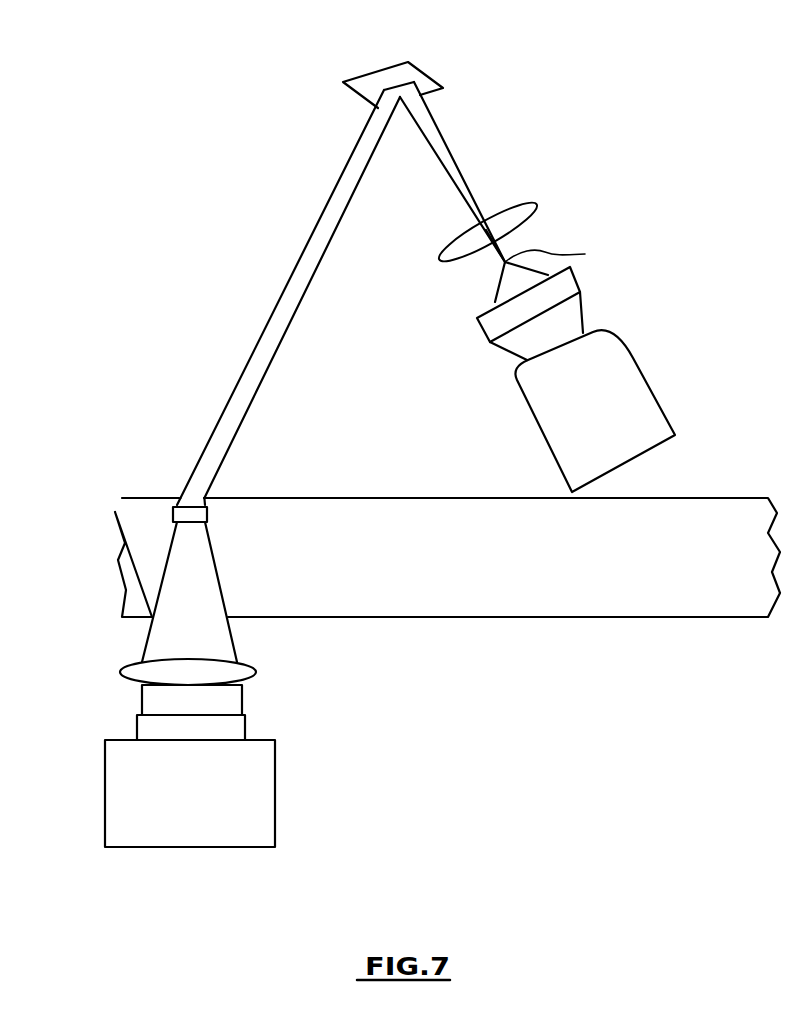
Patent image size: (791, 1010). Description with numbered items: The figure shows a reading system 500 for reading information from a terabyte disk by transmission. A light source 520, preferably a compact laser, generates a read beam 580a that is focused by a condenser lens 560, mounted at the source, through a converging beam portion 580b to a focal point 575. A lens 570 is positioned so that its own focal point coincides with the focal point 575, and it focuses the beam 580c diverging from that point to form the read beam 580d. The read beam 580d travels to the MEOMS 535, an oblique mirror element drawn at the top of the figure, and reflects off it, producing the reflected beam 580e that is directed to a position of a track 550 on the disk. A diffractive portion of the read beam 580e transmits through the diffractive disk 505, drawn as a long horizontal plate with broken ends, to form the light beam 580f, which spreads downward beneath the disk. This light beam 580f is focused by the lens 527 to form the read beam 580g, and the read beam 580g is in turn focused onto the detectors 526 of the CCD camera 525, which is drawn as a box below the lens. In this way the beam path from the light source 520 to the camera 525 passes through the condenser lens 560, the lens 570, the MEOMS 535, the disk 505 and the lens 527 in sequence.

The reading system 500 is at (140, 162).
The diffractive disk 505 is at (650, 598).
The light source 520 is at (633, 358).
The CCD camera 525 is at (267, 783).
The detectors 526 is at (238, 727).
The lens 527 is at (256, 672).
The MEOMS 535 is at (420, 66).
The track 550 is at (173, 505).
The condenser lens 560 is at (582, 290).
The lens 570 is at (522, 214).
The focal point 575 is at (569, 253).
The read beam 580a is at (505, 352).
The read beam 580b is at (500, 283).
The beam 580c is at (502, 240).
The read beam 580d is at (463, 165).
The reflected beam 580e is at (279, 302).
The light beam 580f is at (219, 585).
The read beam 580g is at (142, 695).